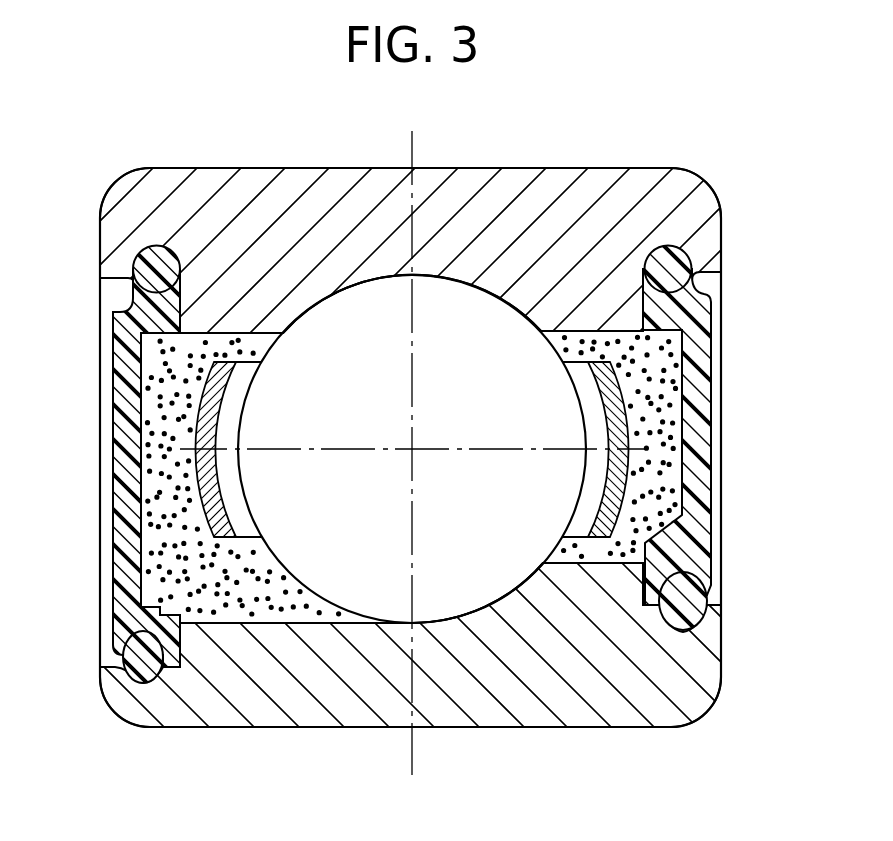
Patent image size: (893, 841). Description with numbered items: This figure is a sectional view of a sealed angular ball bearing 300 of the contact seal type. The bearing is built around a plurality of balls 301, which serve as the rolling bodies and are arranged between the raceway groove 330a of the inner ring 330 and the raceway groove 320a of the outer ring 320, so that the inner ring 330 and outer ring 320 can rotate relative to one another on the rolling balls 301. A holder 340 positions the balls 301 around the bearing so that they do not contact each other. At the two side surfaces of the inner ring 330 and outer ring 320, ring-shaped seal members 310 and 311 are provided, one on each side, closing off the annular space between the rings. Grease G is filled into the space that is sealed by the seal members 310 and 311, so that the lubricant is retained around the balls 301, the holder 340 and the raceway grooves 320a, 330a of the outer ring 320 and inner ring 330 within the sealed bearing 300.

The sealed angular ball bearing 300 is at (778, 744).
The balls 301 is at (470, 530).
The seal member 310 is at (704, 437).
The seal member 311 is at (126, 442).
The outer ring 320 is at (608, 176).
The raceway groove 320a is at (474, 301).
The inner ring 330 is at (657, 710).
The raceway groove 330a is at (446, 608).
The holder 340 is at (616, 381).
The grease G is at (668, 491).